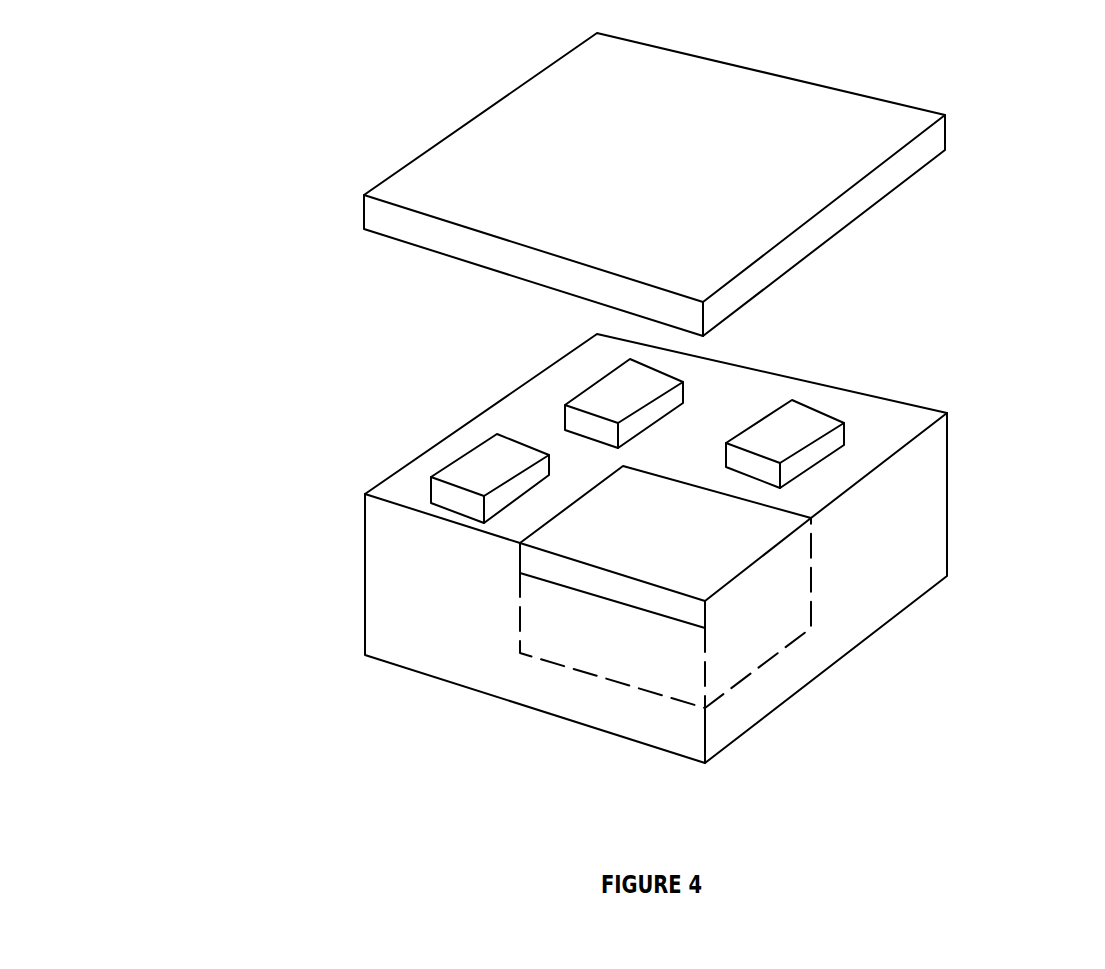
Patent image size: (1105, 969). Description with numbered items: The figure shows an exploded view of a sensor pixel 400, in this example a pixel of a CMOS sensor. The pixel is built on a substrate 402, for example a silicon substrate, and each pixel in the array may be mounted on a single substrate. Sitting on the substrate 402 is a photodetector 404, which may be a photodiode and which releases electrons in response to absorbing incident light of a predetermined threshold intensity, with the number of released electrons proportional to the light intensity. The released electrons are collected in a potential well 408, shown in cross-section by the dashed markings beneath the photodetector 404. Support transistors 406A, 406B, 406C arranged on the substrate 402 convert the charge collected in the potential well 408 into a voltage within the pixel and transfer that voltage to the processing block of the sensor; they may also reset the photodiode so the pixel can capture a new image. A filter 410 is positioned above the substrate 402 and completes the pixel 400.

The sensor pixel 400 is at (275, 215).
The substrate 402 is at (946, 490).
The photodetector 404 is at (812, 548).
The support transistor 406A is at (818, 410).
The support transistor 406B is at (565, 405).
The support transistor 406C is at (431, 477).
The potential well 408 is at (553, 665).
The filter 410 is at (946, 115).